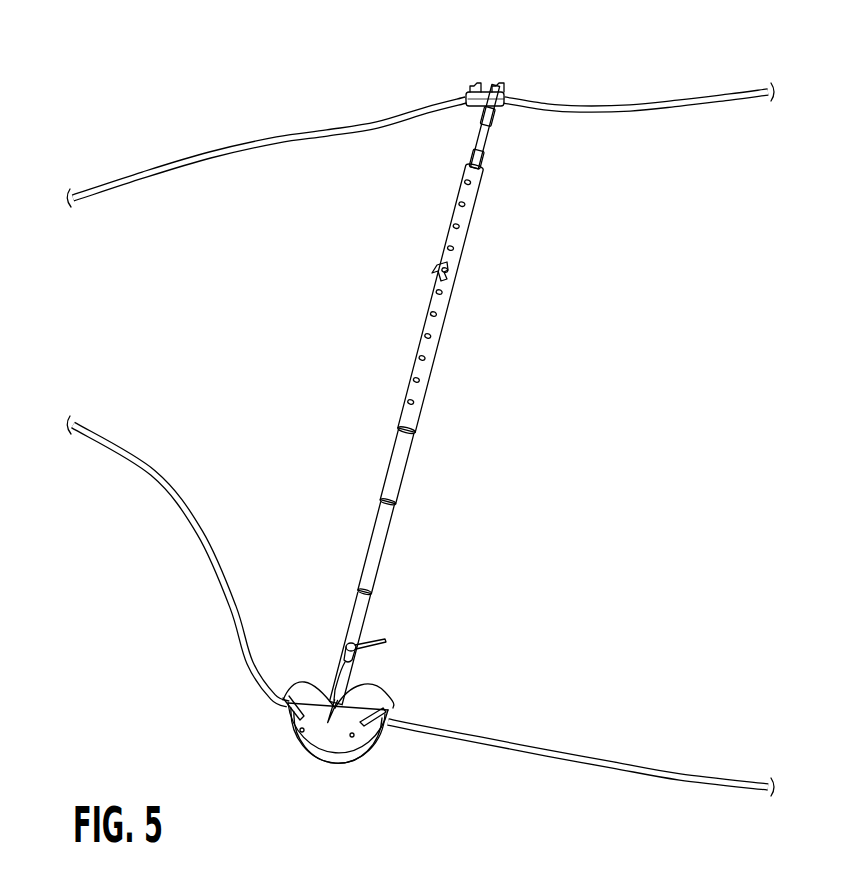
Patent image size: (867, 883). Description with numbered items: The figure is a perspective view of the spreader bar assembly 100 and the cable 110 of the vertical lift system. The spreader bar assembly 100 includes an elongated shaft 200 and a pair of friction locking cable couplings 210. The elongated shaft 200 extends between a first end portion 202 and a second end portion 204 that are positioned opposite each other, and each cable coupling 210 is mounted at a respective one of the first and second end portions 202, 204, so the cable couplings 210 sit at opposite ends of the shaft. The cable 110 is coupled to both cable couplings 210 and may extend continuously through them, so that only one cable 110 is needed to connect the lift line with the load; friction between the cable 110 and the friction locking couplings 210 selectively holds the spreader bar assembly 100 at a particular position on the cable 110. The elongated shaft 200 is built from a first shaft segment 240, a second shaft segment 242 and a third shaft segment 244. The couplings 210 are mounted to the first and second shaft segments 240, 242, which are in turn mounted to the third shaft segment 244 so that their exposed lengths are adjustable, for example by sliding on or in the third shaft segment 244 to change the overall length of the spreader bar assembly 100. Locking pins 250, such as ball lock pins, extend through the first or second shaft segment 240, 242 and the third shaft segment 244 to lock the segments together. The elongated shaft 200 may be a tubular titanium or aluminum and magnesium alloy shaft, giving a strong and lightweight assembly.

The spreader bar assembly 100 is at (461, 404).
The cable 110 is at (673, 107).
The elongated shaft 200 is at (440, 299).
The first end portion 202 is at (374, 672).
The second end portion 204 is at (488, 115).
The cable coupling 210 is at (488, 85).
The first shaft segment 240 is at (368, 577).
The second shaft segment 242 is at (485, 126).
The third shaft segment 244 is at (439, 292).
The locking pin 250 is at (445, 265).